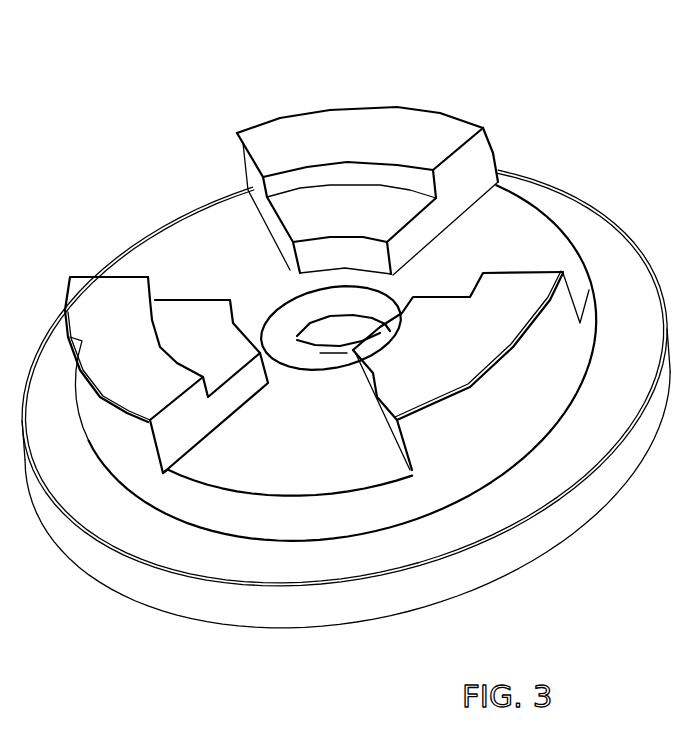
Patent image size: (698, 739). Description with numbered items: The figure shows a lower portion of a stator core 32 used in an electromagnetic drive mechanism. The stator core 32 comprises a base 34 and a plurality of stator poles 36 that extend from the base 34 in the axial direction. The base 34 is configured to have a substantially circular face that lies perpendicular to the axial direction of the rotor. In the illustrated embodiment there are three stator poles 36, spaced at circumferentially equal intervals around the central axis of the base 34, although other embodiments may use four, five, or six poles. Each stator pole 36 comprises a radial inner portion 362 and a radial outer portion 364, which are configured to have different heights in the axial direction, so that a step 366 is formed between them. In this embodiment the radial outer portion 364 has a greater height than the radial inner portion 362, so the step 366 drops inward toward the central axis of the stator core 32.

The stator core 32 is at (354, 325).
The base 34 is at (478, 257).
The stator poles 36 is at (331, 248).
The radial inner portion 362 is at (368, 205).
The radial outer portion 364 is at (348, 125).
The step 366 is at (310, 172).